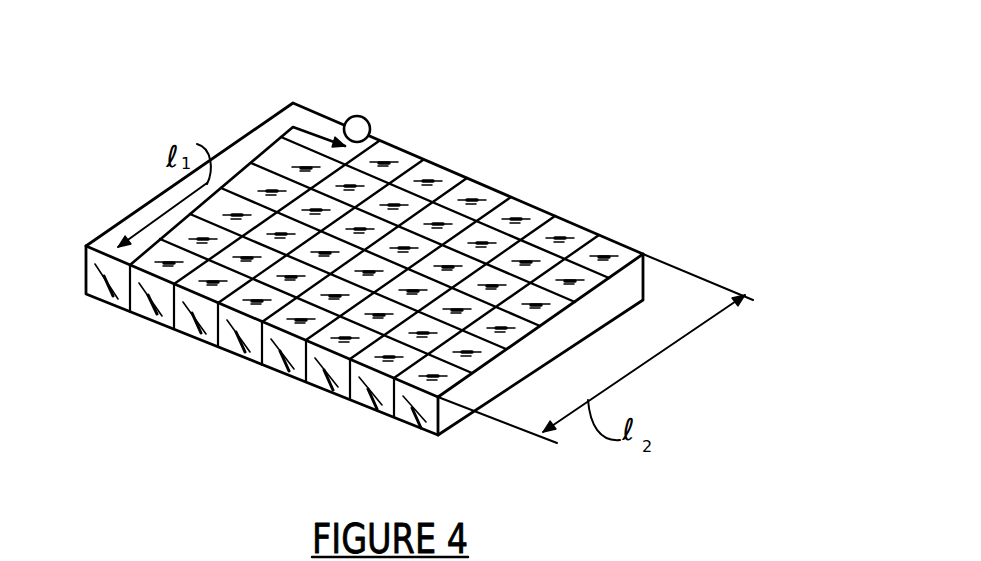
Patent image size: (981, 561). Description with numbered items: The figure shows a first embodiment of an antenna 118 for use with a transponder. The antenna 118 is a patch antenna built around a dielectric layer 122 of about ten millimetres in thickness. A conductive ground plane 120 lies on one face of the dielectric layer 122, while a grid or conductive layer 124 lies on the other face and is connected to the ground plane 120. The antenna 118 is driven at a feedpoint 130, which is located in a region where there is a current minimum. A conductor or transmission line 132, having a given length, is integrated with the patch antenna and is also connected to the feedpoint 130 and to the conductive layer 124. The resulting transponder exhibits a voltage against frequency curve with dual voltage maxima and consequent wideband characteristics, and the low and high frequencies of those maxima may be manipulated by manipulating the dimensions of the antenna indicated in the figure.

The antenna 118 is at (590, 127).
The conductive ground plane 120 is at (566, 368).
The dielectric layer 122 is at (623, 286).
The grid or conductive layer 124 is at (517, 234).
The feedpoint 130 is at (361, 116).
The conductor or transmission line 132 is at (246, 136).